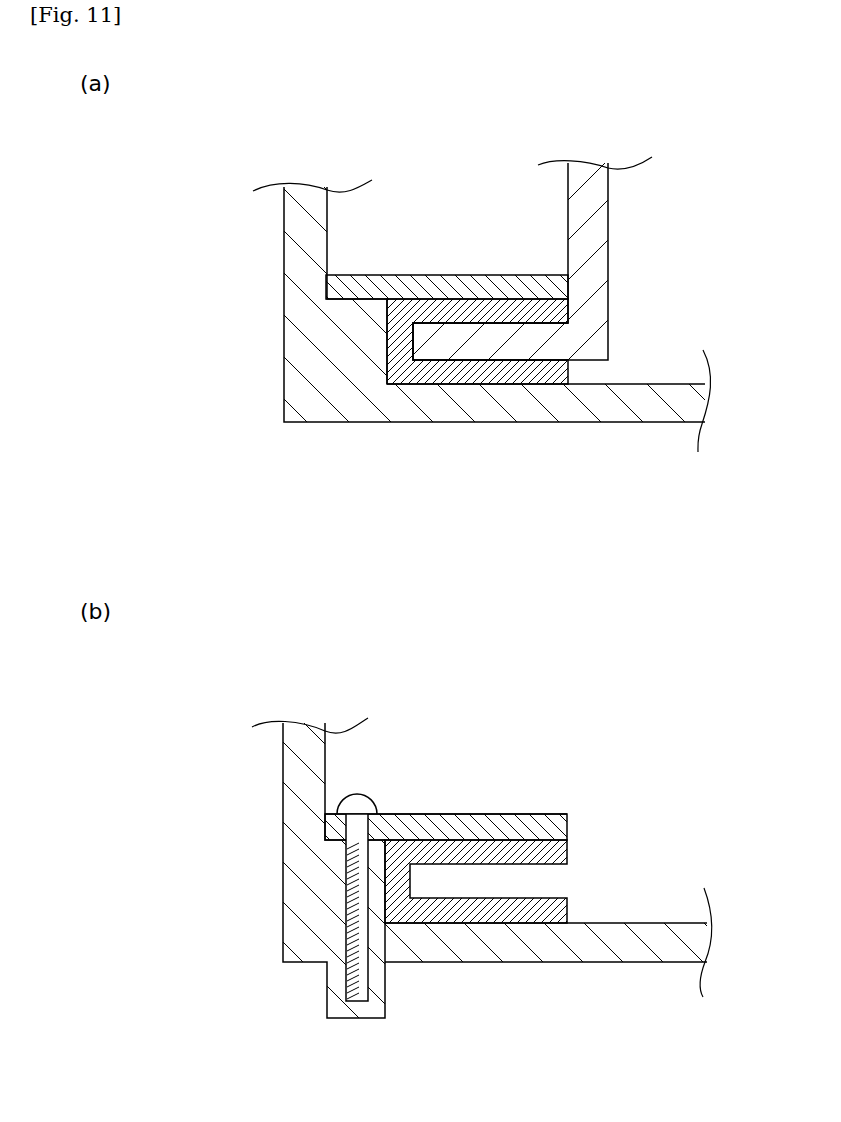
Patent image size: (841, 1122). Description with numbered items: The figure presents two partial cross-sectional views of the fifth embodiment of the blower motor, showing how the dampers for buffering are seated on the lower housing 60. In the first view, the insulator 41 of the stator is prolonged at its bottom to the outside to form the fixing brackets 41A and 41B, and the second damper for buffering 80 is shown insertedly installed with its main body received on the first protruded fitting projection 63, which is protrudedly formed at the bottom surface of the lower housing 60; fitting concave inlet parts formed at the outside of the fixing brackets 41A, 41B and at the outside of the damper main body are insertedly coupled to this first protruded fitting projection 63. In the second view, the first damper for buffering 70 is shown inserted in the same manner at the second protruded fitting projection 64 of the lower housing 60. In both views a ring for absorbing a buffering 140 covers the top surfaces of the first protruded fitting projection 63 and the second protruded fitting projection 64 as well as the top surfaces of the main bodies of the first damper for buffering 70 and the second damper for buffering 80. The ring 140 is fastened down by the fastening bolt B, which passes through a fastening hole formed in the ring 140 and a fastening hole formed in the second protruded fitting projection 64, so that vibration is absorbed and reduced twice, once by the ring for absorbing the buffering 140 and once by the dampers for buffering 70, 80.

The ring for absorbing a buffering 140 is at (458, 283).
The insulator 41 is at (597, 239).
The fixing bracket 41A is at (490, 430).
The fixing bracket 41B is at (472, 348).
The first protruded fitting projection 63 is at (377, 336).
The second protruded fitting projection 64 is at (338, 892).
The lower housing 60 is at (587, 410).
The second damper for buffering 80 is at (421, 377).
The first damper for buffering 70 is at (452, 918).
The fastening bolt B is at (358, 795).